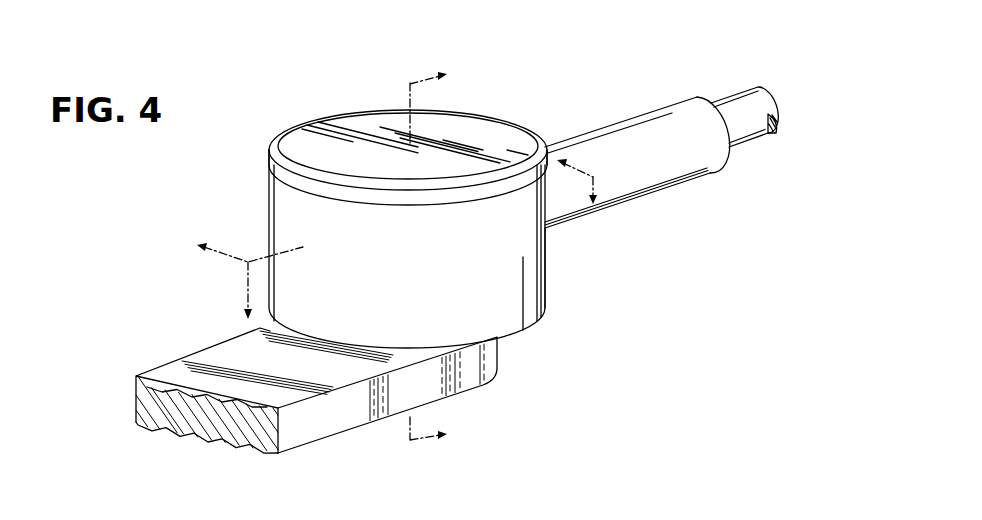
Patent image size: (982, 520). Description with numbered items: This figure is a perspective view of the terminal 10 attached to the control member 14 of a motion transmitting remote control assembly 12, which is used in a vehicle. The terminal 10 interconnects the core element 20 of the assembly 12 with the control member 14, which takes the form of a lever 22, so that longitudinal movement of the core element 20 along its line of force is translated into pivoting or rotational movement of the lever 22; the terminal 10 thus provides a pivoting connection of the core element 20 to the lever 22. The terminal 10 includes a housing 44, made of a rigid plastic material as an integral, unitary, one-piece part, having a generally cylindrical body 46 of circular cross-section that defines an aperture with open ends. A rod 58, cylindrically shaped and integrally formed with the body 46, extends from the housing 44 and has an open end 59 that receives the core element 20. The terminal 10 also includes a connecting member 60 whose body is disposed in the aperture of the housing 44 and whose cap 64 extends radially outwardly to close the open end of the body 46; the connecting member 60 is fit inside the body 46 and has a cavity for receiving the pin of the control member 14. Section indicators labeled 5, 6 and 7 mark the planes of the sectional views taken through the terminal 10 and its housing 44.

The terminal 10 is at (277, 107).
The connecting member 60 is at (500, 120).
The cap 64 is at (385, 120).
The cylindrical body 46 is at (287, 220).
The housing 44 is at (546, 275).
The rod 58 is at (655, 175).
The open end 59 is at (724, 161).
The core element 20 is at (737, 108).
The motion transmitting remote control assembly 12 is at (777, 137).
The lever 22 is at (177, 378).
The control member 14 is at (473, 387).
The section line 6 is at (439, 252).
The section line 7 is at (396, 212).
The section line 5 is at (422, 244).